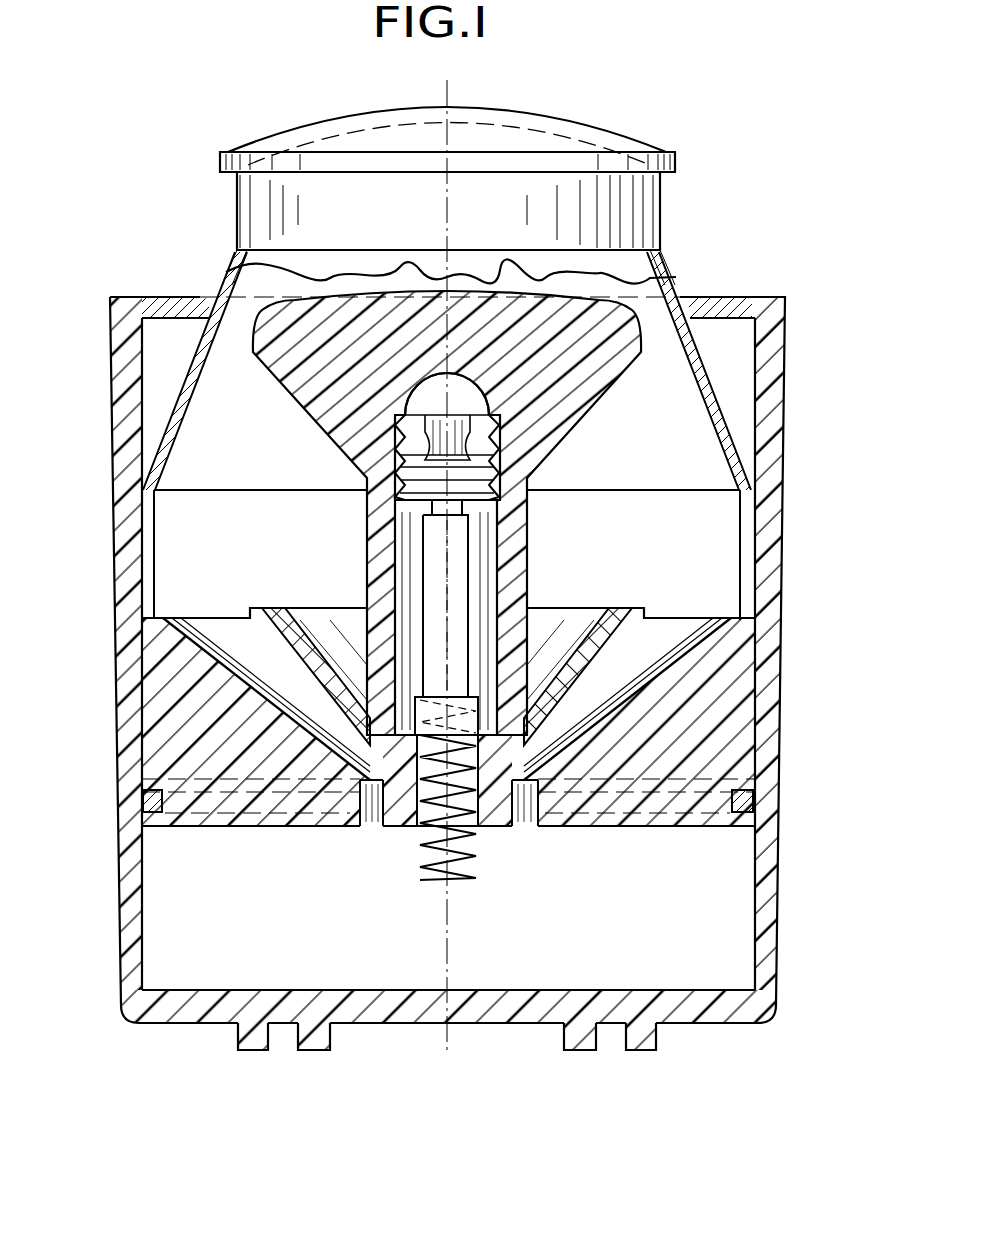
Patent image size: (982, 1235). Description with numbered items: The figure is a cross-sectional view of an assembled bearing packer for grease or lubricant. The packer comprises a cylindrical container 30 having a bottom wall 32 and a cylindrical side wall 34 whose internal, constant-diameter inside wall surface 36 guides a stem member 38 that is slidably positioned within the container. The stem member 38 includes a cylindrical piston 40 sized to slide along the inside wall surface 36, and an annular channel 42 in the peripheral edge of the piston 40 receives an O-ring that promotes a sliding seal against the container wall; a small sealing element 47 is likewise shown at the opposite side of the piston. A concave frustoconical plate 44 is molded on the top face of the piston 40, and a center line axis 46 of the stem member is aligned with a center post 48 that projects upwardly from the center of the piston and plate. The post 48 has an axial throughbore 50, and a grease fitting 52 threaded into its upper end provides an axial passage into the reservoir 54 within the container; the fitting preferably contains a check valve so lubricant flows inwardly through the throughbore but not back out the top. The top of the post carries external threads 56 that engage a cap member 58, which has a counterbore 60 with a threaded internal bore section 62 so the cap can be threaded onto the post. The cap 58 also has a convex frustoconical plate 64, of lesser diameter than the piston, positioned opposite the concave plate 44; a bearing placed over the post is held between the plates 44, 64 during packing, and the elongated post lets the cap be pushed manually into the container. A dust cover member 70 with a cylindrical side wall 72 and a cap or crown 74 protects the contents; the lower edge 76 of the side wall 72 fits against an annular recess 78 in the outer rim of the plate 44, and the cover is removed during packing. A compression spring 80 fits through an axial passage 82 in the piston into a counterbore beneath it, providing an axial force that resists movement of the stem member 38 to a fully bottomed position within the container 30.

The cylindrical container 30 is at (778, 905).
The bottom wall 32 is at (710, 1012).
The cylindrical side wall 34 is at (775, 850).
The inside wall surface 36 is at (770, 930).
The stem member 38 is at (185, 822).
The cylindrical piston 40 is at (273, 815).
The annular channel 42 is at (727, 802).
The concave frustoconical plate 44 is at (205, 692).
The center line axis 46 is at (449, 190).
The right seal ring 47 is at (760, 798).
The center post 48 is at (482, 566).
The axial throughbore 50 is at (462, 690).
The grease fitting 52 is at (420, 388).
The reservoir 54 is at (392, 950).
The external threads 56 is at (505, 470).
The cap member 58 is at (357, 312).
The counterbore 60 is at (395, 568).
The threaded internal bore section 62 is at (500, 412).
The convex frustoconical plate 64 is at (640, 612).
The dust cover member 70 is at (660, 205).
The cylindrical side wall 72 is at (745, 512).
The cap or crown 74 is at (603, 140).
The lower edge 76 is at (748, 660).
The annular recess 78 is at (158, 628).
The compression spring 80 is at (420, 854).
The axial passage 82 is at (502, 800).